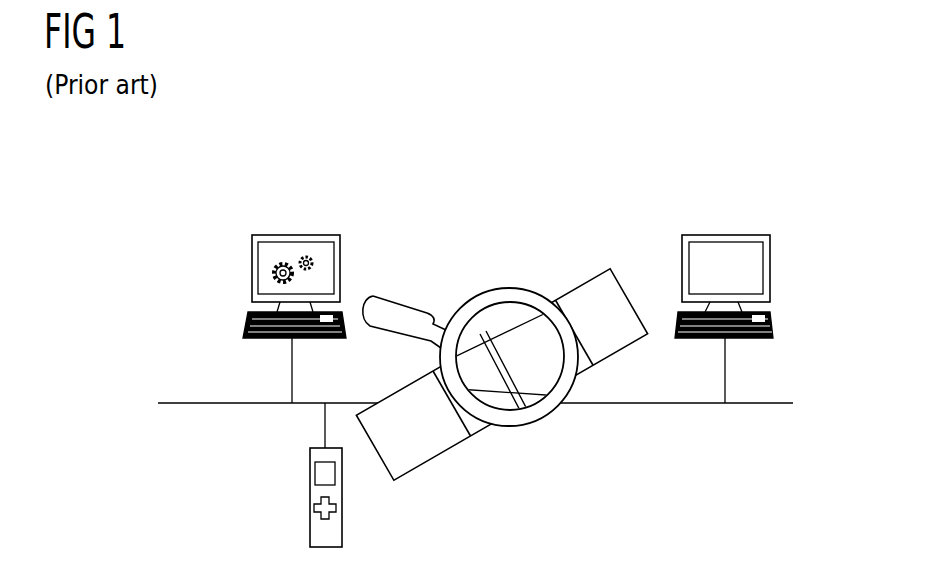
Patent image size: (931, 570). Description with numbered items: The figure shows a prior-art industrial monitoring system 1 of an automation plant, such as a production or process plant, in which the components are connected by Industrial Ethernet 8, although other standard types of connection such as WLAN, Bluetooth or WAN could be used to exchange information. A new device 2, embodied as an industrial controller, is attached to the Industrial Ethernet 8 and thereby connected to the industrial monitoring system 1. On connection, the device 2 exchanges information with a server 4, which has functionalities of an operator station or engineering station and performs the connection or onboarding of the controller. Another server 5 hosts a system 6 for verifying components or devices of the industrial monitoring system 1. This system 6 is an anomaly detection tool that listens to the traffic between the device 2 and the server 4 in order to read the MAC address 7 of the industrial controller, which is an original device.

The industrial monitoring system 1 is at (766, 176).
The device 2 is at (343, 520).
The server 4 is at (772, 267).
The server 5 is at (270, 319).
The system 6 is at (273, 266).
The MAC address 7 is at (508, 318).
The Industrial Ethernet 8 is at (637, 405).